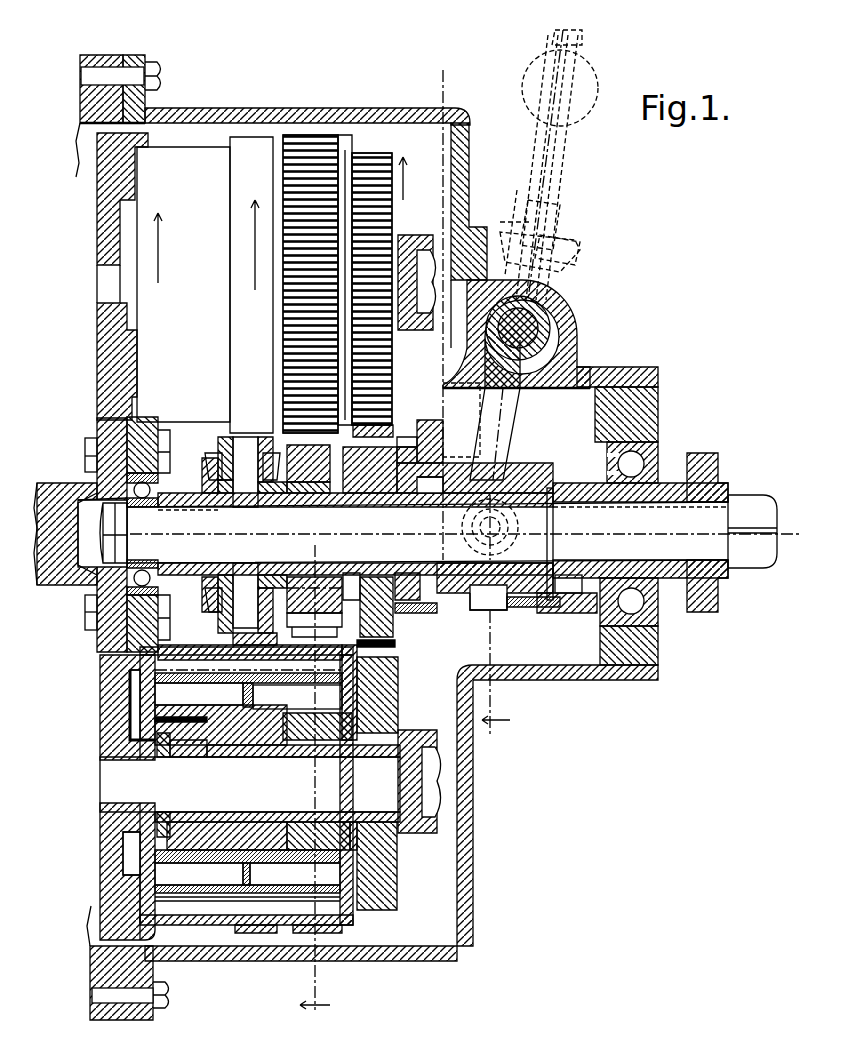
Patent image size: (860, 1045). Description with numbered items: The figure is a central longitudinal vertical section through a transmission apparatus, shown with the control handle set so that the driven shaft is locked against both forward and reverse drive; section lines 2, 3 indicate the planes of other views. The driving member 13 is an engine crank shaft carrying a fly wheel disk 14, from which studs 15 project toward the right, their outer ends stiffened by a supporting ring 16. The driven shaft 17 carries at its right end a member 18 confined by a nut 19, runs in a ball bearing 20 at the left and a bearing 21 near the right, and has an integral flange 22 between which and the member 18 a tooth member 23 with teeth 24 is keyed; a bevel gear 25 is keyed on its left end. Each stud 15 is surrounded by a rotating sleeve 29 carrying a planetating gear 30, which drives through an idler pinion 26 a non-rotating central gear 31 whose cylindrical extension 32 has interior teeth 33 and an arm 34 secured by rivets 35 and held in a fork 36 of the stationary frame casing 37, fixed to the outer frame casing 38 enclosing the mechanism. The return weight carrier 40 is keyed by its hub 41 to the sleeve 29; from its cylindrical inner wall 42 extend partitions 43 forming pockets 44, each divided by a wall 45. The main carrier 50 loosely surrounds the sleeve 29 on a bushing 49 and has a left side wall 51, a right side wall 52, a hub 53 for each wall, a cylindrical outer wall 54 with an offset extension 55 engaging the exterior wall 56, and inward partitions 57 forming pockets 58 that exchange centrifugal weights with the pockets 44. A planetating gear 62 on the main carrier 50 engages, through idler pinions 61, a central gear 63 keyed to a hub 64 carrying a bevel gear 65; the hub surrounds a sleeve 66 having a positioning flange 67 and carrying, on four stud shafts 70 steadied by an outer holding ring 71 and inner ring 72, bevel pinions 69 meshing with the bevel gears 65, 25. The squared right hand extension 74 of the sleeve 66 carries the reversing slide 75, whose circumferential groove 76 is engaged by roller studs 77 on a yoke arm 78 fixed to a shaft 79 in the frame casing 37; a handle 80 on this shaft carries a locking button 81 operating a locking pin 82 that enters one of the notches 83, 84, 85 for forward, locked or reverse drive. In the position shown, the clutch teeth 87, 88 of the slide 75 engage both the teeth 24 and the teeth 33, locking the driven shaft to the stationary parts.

The section line 2- 2 is at (375, 543).
The section line 3- 3 is at (533, 382).
The driving member 13 is at (90, 534).
The fly wheel disk 14 is at (97, 212).
The studs 15 is at (250, 784).
The supporting ring 16 is at (428, 835).
The driven shaft 17 is at (463, 532).
The member 18 is at (720, 526).
The nut 19 is at (752, 531).
The ball bearing 20 is at (143, 508).
The ball bearing 21 is at (650, 462).
The integral flange 22 is at (554, 549).
The tooth member 23 is at (598, 564).
The teeth 24 is at (568, 584).
The bevel gear 25 is at (213, 492).
The idler pinion 26 is at (370, 418).
The rotating sleeve 29 is at (338, 814).
The planetating gear 30 is at (380, 153).
The central gear 31 is at (398, 640).
The cylindrical extension 32 is at (440, 613).
The teeth 33 is at (410, 613).
The arm 34 is at (443, 450).
The rivets 35 is at (443, 468).
The fork 36 is at (443, 430).
The stationary frame casing 37 is at (645, 368).
The outer frame casing 38 is at (198, 108).
The return weight carrier 40 is at (190, 700).
The hub 41 is at (250, 725).
The cylindrical inner wall 42 is at (292, 696).
The partitions 43 is at (199, 693).
The pockets 44 is at (247, 874).
The wall 45 is at (243, 878).
The bushing 49 is at (190, 745).
The main carrier 50 is at (88, 705).
The annular left side wall 51 is at (140, 720).
The right side wall 52 is at (348, 690).
The hub 53 is at (200, 840).
The cylindrical outer wall 54 is at (207, 925).
The offset extension 55 is at (242, 933).
The cylindrical exterior wall 56 is at (282, 930).
The partitions 57 is at (208, 603).
The pockets 58 is at (330, 932).
The idler pinions 61 is at (290, 658).
The planetating gear 62 is at (305, 135).
The central gear 63 is at (288, 507).
The hub 64 is at (305, 507).
The bevel gear 65 is at (288, 576).
The sleeve 66 is at (333, 563).
The positioning flange 67 is at (430, 575).
The bevel pinions 69 is at (210, 452).
The stud shafts 70 is at (245, 532).
The outer holding ring 71 is at (230, 437).
The inner ring 72 is at (237, 507).
The right hand extension 74 is at (445, 507).
The reversing slide 75 is at (460, 580).
The circumferential groove 76 is at (497, 600).
The roller studs 77 is at (513, 525).
The yoke arm 78 is at (505, 440).
The shaft 79 is at (540, 370).
The handle 80 is at (560, 168).
The locking button 81 is at (552, 40).
The locking pin 82 is at (580, 260).
The notch 83 is at (515, 220).
The notch 84 is at (555, 232).
The notch 85 is at (570, 250).
The clutch teeth 87 is at (525, 607).
The clutch teeth 88 is at (462, 603).